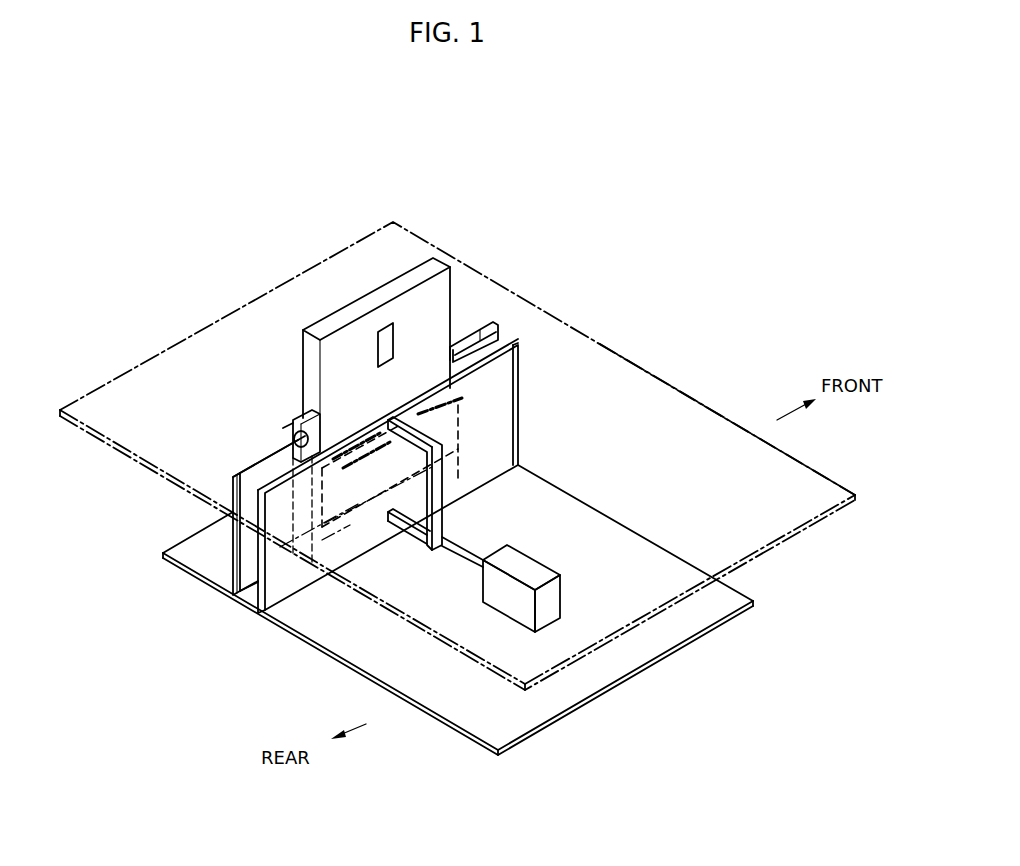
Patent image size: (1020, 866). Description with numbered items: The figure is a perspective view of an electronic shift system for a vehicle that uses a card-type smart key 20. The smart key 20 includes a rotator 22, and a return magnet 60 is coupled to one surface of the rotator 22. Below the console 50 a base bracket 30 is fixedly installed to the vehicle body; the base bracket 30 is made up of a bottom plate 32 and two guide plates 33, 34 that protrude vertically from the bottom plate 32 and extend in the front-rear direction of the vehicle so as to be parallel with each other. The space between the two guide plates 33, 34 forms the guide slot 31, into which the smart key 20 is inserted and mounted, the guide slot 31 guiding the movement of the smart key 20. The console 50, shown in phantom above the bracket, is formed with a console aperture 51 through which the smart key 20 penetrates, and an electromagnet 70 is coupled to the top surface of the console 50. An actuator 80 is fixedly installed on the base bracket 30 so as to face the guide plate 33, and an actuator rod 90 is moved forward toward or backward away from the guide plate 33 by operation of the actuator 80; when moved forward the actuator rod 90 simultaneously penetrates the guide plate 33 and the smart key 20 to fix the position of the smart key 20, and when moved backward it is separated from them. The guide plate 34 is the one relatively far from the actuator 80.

The smart key 20 is at (450, 261).
The rotator 22 is at (400, 282).
The base bracket 30 is at (435, 586).
The guide slot 31 is at (247, 562).
The bottom plate 32 is at (465, 710).
The guide plate 33 is at (287, 586).
The guide plate 34 is at (232, 517).
The console 50 is at (670, 403).
The console aperture 51 is at (498, 345).
The return magnet 60 is at (384, 343).
The electromagnet 70 is at (452, 383).
The actuator 80 is at (560, 610).
The actuator rod 90 is at (443, 553).